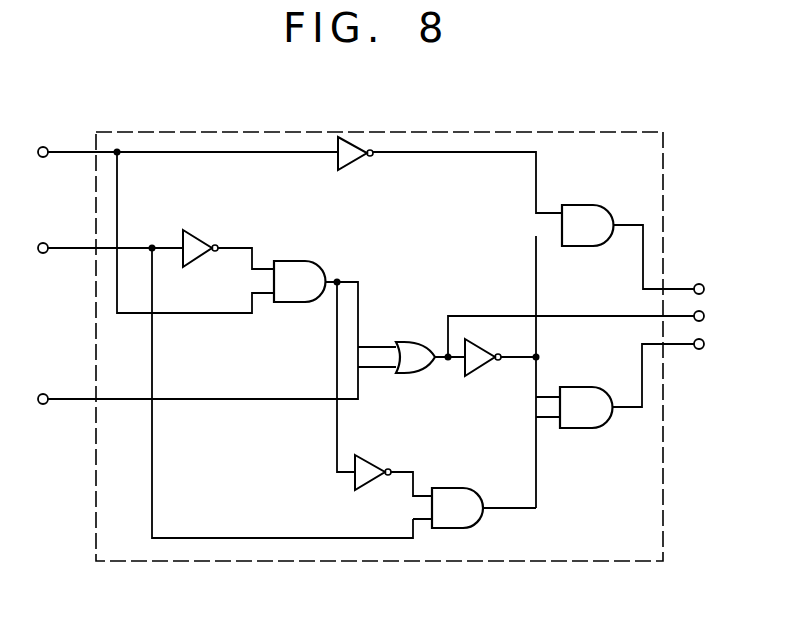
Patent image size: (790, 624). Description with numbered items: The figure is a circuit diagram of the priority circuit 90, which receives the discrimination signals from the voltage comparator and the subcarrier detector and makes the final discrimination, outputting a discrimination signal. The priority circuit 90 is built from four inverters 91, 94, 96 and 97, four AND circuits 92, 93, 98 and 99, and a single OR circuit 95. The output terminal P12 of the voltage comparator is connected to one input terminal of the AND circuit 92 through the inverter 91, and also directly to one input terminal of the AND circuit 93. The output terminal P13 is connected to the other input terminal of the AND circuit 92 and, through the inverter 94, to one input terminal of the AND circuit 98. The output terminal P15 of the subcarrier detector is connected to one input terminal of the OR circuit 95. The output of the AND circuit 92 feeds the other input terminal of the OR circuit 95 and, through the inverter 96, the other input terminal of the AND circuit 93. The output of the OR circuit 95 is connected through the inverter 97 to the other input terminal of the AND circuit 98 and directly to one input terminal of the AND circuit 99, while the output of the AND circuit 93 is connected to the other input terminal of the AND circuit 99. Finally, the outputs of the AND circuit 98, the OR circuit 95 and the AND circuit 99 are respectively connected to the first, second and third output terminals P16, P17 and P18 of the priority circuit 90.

The priority circuit 90 is at (592, 562).
The inverter 91 is at (201, 242).
The AND circuit 92 is at (300, 260).
The AND circuit 93 is at (460, 487).
The inverter 94 is at (357, 162).
The OR circuit 95 is at (412, 341).
The inverter 96 is at (373, 463).
The inverter 97 is at (482, 368).
The AND circuit 98 is at (580, 204).
The AND circuit 99 is at (576, 387).
The output terminal P12 is at (43, 243).
The output terminal P13 is at (43, 147).
The output terminal P15 is at (43, 394).
The first output terminal P16 is at (703, 273).
The second output terminal P17 is at (699, 311).
The third output terminal P18 is at (699, 350).